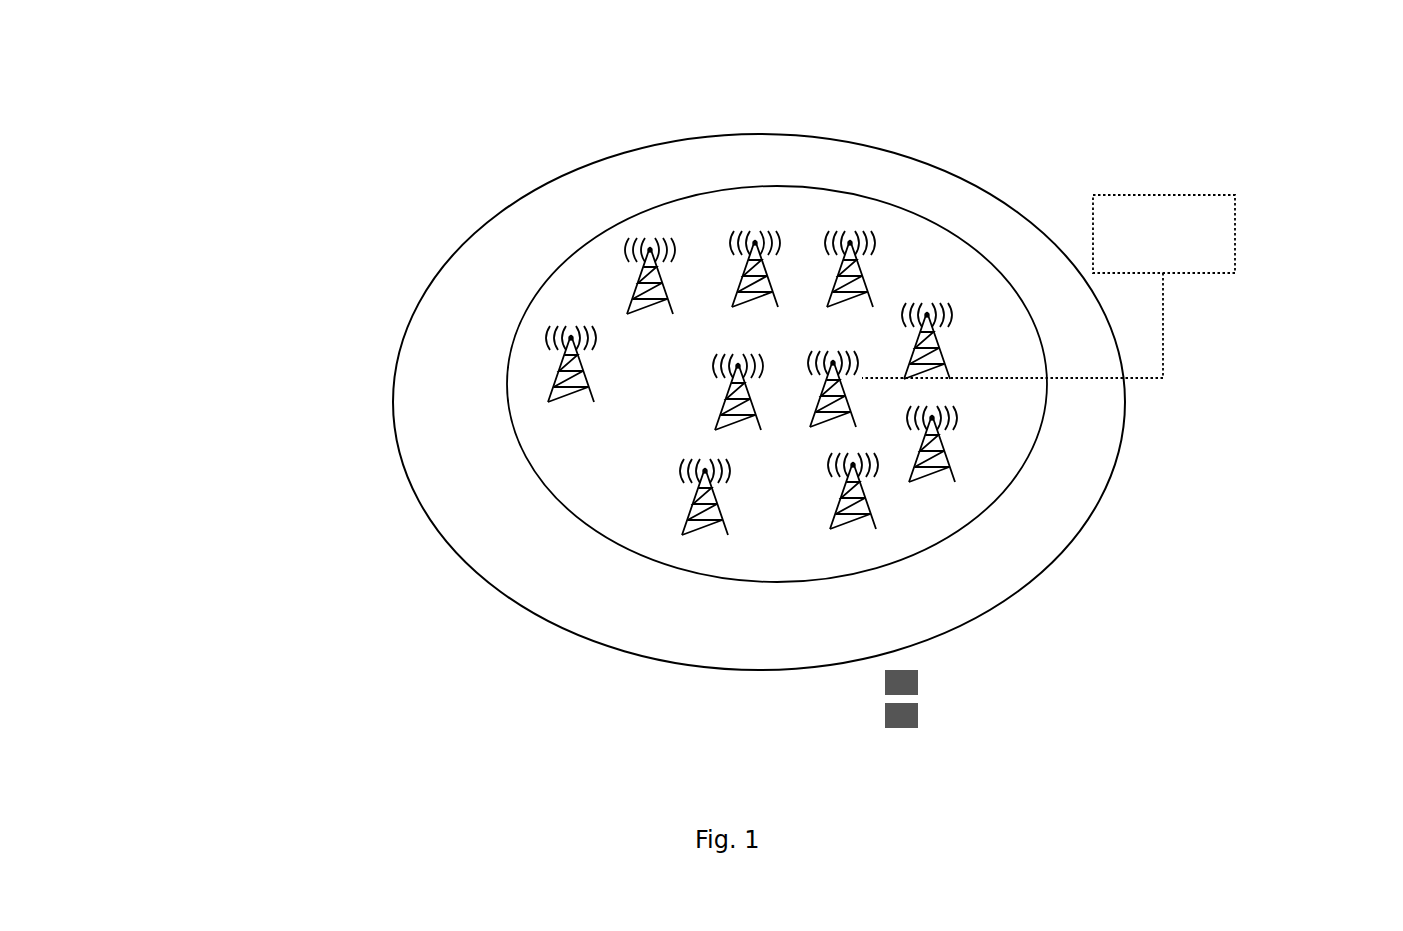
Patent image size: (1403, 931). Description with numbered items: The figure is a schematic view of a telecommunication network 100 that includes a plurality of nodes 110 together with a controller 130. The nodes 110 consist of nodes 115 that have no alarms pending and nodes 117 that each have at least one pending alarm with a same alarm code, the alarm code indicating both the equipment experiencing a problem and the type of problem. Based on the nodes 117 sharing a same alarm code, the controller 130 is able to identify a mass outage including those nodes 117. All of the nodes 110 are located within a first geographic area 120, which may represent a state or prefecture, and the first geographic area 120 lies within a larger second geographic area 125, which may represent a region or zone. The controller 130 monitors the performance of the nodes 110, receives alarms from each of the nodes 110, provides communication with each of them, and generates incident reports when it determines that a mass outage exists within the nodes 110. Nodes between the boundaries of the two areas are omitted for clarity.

The telecommunication network 100 is at (142, 104).
The nodes 110 is at (596, 250).
The nodes having no alarms 115 is at (650, 240).
The nodes having alarms with a same alarm code 117 is at (845, 238).
The first geographic area 120 is at (573, 520).
The second geographic area 125 is at (520, 602).
The controller 130 is at (1220, 256).